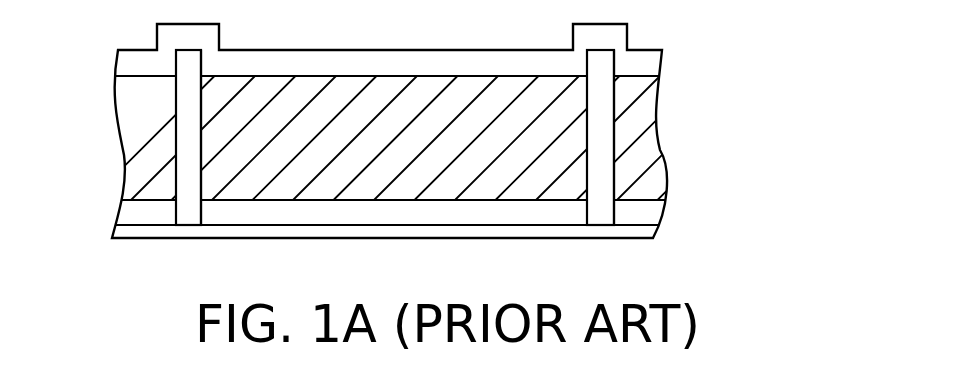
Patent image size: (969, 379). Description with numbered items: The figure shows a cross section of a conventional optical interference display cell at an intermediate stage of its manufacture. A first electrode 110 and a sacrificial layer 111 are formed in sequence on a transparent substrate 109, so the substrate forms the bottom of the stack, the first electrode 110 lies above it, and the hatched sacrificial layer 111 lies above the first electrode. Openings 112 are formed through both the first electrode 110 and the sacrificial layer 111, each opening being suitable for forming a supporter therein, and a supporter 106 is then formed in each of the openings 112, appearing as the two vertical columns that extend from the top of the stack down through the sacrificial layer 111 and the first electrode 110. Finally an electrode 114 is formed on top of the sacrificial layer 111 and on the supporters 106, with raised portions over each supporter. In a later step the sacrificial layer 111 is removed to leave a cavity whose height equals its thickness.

The electrode 114 is at (643, 65).
The openings 112 is at (620, 128).
The sacrificial layer 111 is at (553, 145).
The supporter 106 is at (598, 173).
The first electrode 110 is at (573, 212).
The transparent substrate 109 is at (638, 236).